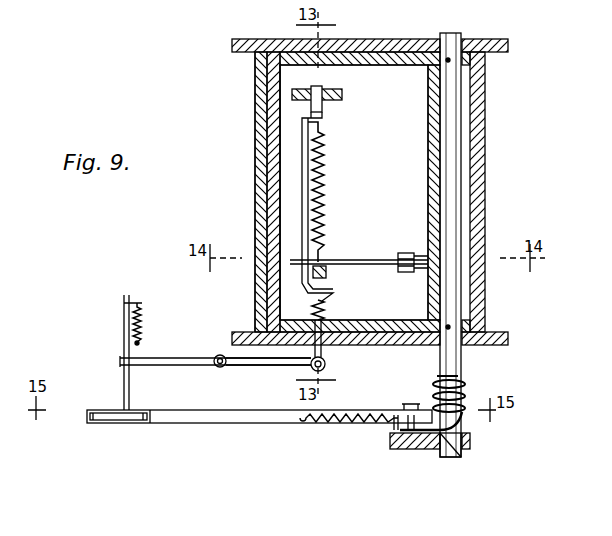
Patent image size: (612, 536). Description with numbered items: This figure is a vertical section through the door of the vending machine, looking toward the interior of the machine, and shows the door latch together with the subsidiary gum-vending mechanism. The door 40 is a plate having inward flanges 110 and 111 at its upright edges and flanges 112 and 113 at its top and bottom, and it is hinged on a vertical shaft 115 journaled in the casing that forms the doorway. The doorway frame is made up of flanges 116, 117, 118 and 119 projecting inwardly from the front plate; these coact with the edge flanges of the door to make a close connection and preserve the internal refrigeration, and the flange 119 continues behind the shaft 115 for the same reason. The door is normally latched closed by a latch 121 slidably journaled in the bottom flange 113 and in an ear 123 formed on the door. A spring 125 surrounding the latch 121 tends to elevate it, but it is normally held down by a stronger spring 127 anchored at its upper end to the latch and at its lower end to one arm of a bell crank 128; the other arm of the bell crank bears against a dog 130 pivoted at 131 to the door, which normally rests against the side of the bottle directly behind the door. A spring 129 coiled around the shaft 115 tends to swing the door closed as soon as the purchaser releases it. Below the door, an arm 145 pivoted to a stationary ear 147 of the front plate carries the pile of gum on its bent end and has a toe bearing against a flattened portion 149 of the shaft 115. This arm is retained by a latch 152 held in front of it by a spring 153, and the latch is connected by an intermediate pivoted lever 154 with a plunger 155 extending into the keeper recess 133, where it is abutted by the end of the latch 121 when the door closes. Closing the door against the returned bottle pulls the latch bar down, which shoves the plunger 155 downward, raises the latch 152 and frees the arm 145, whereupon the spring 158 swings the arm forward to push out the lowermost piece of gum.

The door 40 is at (428, 154).
The inward flange 110 is at (258, 196).
The inward flange 111 is at (428, 192).
The top flange 112 is at (404, 66).
The bottom flange 113 is at (382, 326).
The vertical shaft 115 is at (461, 368).
The flange 116 is at (370, 350).
The flange 117 is at (384, 32).
The flange 118 is at (258, 166).
The flange 119 is at (485, 186).
The latch 121 is at (326, 298).
The ear 123 is at (324, 96).
The spring 125 is at (326, 312).
The spring 127 is at (323, 202).
The bell crank 128 is at (324, 264).
The spring 129 is at (434, 378).
The dog 130 is at (373, 260).
The pivot 131 is at (406, 252).
The keeper recess 133 is at (326, 360).
The arm 145 is at (224, 424).
The stationary ear 147 is at (436, 440).
The flattened portion 149 is at (456, 442).
The latch 152 is at (129, 380).
The spring 153 is at (139, 334).
The intermediate pivoted lever 154 is at (263, 366).
The plunger 155 is at (312, 352).
The spring 158 is at (352, 426).